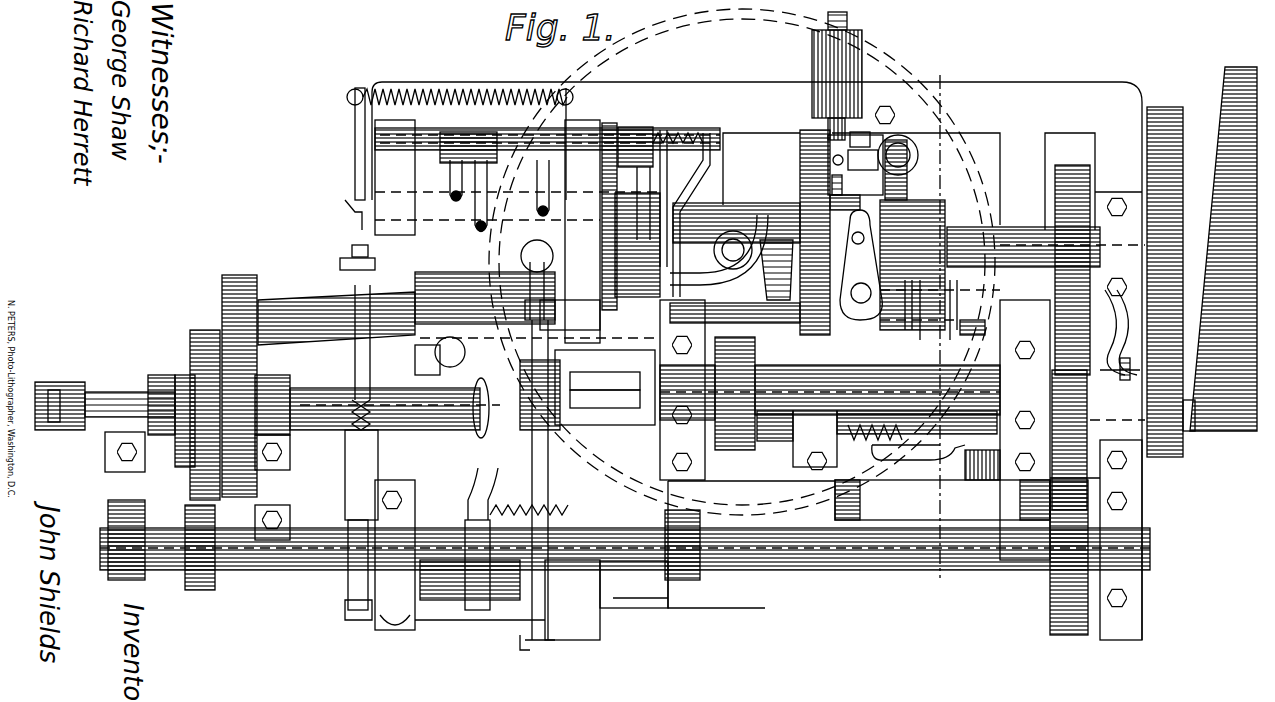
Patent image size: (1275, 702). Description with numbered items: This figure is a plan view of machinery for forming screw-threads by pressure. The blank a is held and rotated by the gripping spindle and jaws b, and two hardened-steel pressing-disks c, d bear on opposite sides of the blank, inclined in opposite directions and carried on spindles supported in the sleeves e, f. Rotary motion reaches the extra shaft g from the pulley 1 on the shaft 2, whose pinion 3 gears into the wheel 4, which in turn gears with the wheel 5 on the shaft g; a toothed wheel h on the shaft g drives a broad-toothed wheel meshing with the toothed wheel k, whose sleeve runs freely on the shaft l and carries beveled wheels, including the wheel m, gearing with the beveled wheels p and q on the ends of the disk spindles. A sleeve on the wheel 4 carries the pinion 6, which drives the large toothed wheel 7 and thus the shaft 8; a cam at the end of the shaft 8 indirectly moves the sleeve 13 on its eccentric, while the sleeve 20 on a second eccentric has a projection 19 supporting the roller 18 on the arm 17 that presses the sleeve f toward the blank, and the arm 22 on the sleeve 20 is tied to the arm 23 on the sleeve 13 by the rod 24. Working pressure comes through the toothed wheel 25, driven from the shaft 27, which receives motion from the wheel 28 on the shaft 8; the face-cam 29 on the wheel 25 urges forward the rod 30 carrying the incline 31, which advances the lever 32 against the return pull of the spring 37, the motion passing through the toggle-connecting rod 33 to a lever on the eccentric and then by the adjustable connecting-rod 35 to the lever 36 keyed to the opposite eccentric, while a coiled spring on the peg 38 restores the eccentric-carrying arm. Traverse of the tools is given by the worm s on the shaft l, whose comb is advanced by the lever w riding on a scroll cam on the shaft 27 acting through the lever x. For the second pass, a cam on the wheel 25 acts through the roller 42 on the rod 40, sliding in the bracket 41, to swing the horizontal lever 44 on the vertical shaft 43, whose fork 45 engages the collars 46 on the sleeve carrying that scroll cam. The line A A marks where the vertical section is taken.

The pulley 1 is at (707, 393).
The shaft 2 is at (877, 390).
The pinion 3 is at (1069, 440).
The wheel 4 is at (1085, 440).
The wheel 5 is at (1050, 588).
The pinion 6 is at (1190, 440).
The large toothed wheel 7 is at (1180, 312).
The shaft 8 is at (1023, 246).
The sleeve 13 is at (485, 298).
The arm 17 is at (470, 478).
The roller 18 is at (472, 565).
The projection 19 is at (467, 580).
The sleeve 20 is at (445, 622).
The arm 22 is at (520, 650).
The arm 23 is at (560, 312).
The rod 24 is at (550, 462).
The toothed wheel 25 is at (800, 172).
The shaft 27 is at (845, 322).
The wheel 28 is at (1088, 185).
The face-cam 29 is at (776, 270).
The rod 30 is at (780, 226).
The incline 31 is at (450, 195).
The lever 32 is at (345, 215).
The toggle-connecting rod 33 is at (352, 265).
The adjustable connecting-rod 35 is at (378, 462).
The lever 36 is at (355, 620).
The spring 37 is at (433, 90).
The peg 38 is at (525, 262).
The rod 40 is at (850, 18).
The bracket 41 is at (862, 60).
The roller 42 is at (842, 185).
The vertical shaft 43 is at (905, 150).
The horizontal lever 44 is at (860, 131).
The fork 45 is at (905, 320).
The collars 46 is at (912, 320).
The blank a is at (440, 355).
The gripping spindle and jaws b is at (660, 390).
The pressing-disk c is at (490, 375).
The pressing-disk d is at (488, 430).
The sleeve e is at (300, 310).
The sleeve f is at (385, 409).
The extra shaft g is at (625, 551).
The toothed wheel h is at (185, 575).
The toothed wheel k is at (190, 345).
The shaft l is at (95, 390).
The beveled toothed wheel m is at (208, 421).
The beveled toothed wheel p is at (228, 320).
The beveled toothed wheel q is at (280, 365).
The worm s is at (860, 440).
The lever w is at (950, 225).
The lever x is at (918, 455).
The section line A A is at (938, 325).